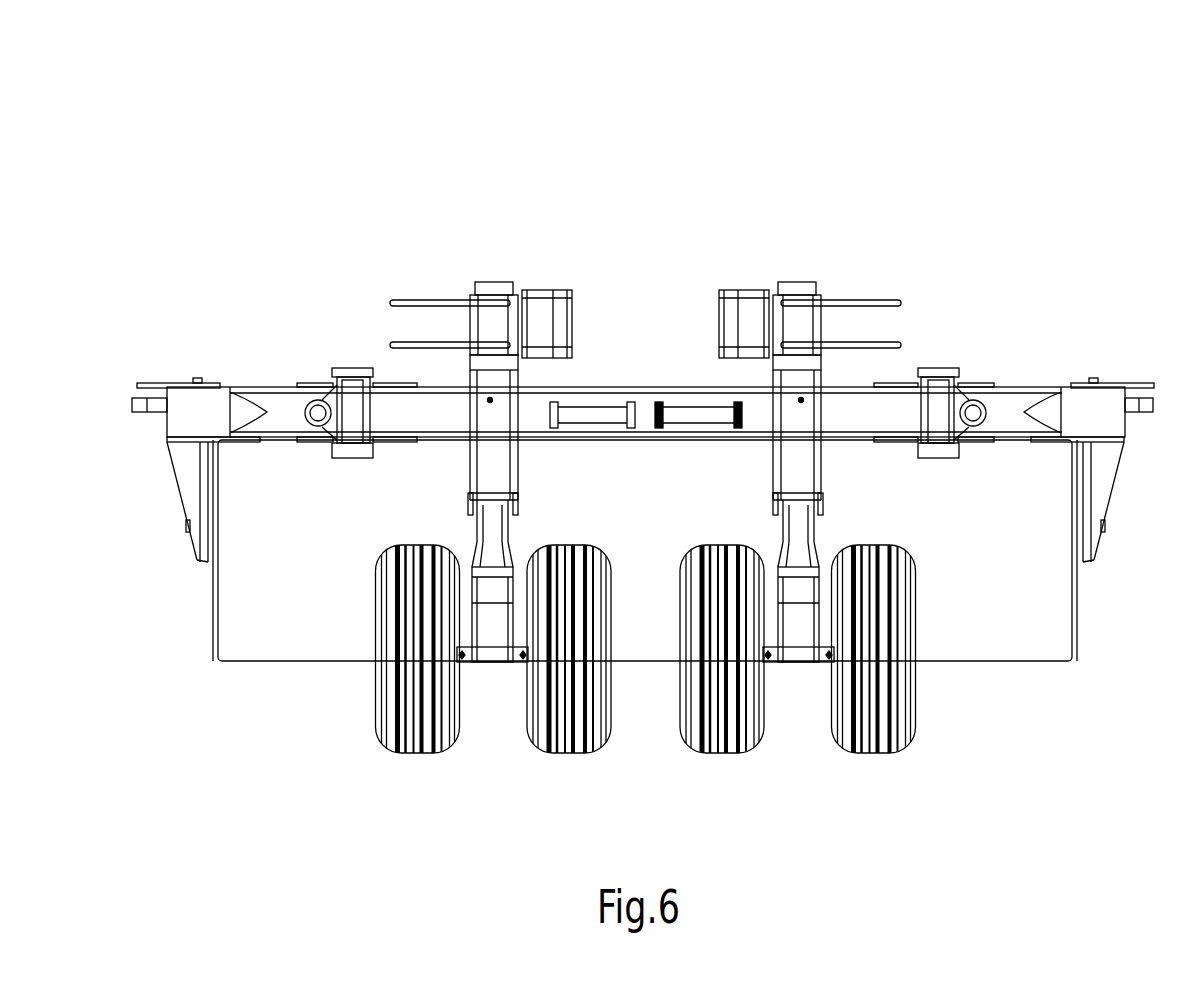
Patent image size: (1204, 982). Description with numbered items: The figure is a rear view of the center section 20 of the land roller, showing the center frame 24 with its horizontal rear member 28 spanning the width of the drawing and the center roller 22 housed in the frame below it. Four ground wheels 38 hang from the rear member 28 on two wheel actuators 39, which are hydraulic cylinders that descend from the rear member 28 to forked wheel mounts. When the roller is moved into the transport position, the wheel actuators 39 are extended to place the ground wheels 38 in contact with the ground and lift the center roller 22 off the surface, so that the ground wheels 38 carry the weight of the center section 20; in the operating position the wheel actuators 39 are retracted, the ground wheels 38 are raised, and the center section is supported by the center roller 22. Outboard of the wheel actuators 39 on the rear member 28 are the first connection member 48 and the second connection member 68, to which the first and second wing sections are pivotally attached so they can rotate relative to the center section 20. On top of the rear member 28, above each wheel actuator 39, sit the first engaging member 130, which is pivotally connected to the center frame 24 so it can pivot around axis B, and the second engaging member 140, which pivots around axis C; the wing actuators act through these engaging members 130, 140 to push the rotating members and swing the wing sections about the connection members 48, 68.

The center section 20 is at (612, 82).
The center roller 22 is at (1057, 640).
The center frame 24 is at (1045, 388).
The rear member 28 is at (283, 404).
The ground wheels 38 is at (402, 753).
The wheel actuators 39 is at (490, 450).
The first connection member 48 is at (963, 368).
The second connection member 68 is at (352, 385).
The first engaging member 130 is at (845, 300).
The second engaging member 140 is at (437, 300).
The axis B is at (795, 282).
The axis C is at (493, 282).